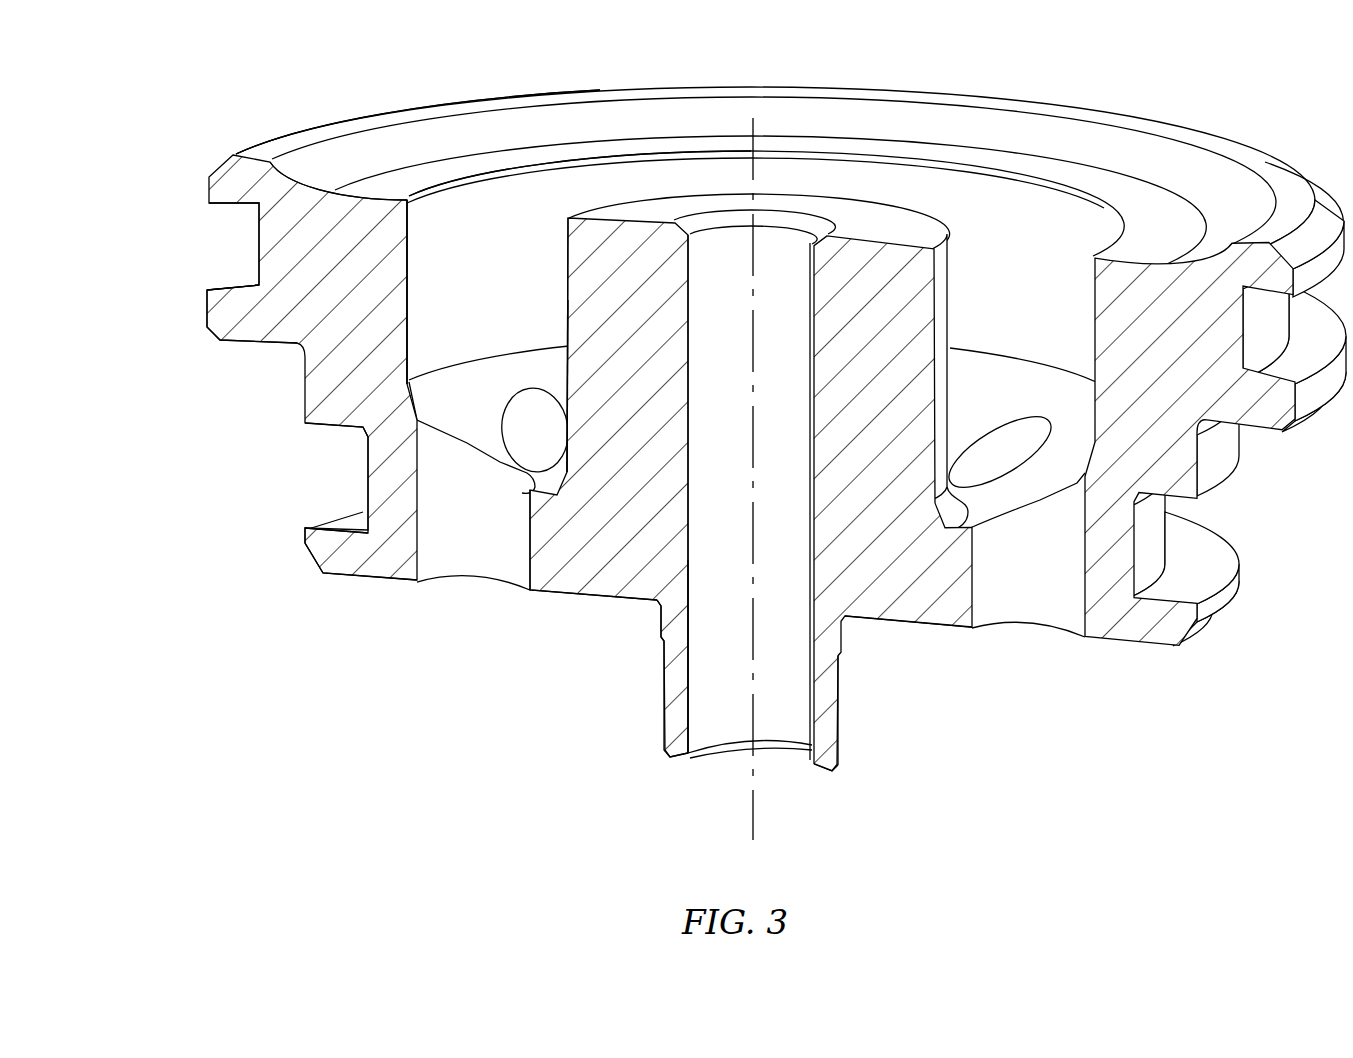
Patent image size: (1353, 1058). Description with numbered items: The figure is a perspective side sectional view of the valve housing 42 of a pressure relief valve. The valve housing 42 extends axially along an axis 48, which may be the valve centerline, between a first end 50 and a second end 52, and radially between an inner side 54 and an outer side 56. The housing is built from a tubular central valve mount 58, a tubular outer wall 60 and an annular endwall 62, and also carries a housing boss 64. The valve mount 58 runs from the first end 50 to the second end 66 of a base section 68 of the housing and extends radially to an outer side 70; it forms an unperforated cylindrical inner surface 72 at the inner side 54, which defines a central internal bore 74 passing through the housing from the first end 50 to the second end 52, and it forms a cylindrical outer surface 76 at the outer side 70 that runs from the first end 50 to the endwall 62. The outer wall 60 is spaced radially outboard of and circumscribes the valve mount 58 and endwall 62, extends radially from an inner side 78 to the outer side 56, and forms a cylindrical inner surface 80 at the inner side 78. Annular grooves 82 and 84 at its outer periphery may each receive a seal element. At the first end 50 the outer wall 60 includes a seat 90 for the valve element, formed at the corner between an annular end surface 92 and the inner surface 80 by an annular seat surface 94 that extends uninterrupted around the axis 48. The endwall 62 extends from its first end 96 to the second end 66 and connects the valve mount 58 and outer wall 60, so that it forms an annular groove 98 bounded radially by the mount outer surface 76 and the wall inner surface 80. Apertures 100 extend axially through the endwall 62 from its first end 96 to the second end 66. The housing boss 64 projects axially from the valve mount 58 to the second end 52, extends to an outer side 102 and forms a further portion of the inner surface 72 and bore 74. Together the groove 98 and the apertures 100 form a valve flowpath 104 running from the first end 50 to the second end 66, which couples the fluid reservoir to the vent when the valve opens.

The valve housing 42 is at (1206, 88).
The axis 48 is at (753, 835).
The first end 50 is at (840, 112).
The second end 52 is at (820, 770).
The inner side 54 is at (690, 510).
The outer side 56 is at (205, 302).
The central valve mount 58 is at (640, 218).
The outer wall 60 is at (335, 190).
The endwall 62 is at (563, 595).
The housing boss 64 is at (655, 715).
The second end 66 is at (915, 622).
The base section 68 is at (328, 600).
The outer side 70 is at (568, 290).
The cylindrical inner surface 72 is at (690, 590).
The central internal bore 74 is at (722, 705).
The cylindrical outer surface 76 is at (568, 325).
The inner side 78 is at (407, 315).
The cylindrical inner surface 80 is at (407, 315).
The annular groove 82 is at (228, 237).
The annular groove 84 is at (340, 463).
The seat 90 is at (447, 180).
The annular end surface 92 is at (400, 177).
The annular seat surface 94 is at (447, 180).
The first end 96 is at (470, 440).
The annular groove 98 is at (510, 228).
The apertures 100 is at (535, 410).
The outer side 102 is at (838, 705).
The valve flowpath 104 is at (925, 190).